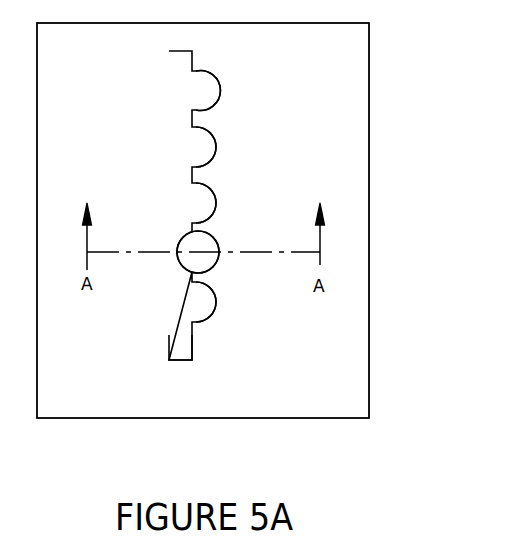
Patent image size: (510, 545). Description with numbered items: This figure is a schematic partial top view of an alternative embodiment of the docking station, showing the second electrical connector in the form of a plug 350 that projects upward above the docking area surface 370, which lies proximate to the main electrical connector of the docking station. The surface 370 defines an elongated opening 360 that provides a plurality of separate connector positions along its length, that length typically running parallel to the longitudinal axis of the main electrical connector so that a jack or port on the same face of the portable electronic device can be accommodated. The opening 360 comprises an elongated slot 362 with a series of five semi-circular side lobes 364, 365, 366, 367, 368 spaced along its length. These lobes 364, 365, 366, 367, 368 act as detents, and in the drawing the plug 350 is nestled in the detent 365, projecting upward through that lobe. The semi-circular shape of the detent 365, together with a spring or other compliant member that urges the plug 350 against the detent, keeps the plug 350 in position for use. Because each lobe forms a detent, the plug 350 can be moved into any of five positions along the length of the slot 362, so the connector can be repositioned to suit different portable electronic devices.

The plug 350 is at (172, 244).
The elongated opening 360 is at (168, 70).
The elongated slot 362 is at (183, 334).
The semi-circular side lobe 364 is at (207, 301).
The detent 365 is at (214, 256).
The semi-circular side lobe 366 is at (207, 202).
The semi-circular side lobe 367 is at (207, 146).
The semi-circular side lobe 368 is at (207, 89).
The docking area surface 370 is at (350, 123).